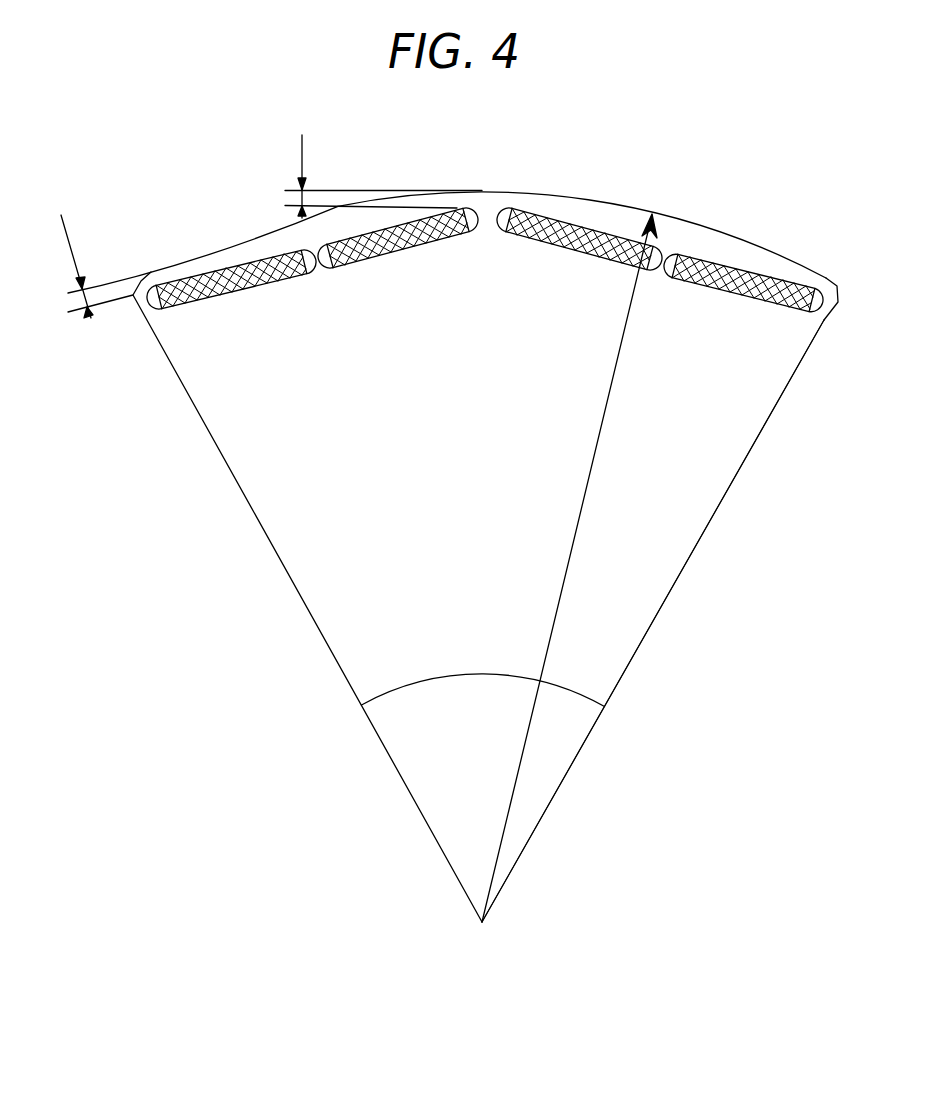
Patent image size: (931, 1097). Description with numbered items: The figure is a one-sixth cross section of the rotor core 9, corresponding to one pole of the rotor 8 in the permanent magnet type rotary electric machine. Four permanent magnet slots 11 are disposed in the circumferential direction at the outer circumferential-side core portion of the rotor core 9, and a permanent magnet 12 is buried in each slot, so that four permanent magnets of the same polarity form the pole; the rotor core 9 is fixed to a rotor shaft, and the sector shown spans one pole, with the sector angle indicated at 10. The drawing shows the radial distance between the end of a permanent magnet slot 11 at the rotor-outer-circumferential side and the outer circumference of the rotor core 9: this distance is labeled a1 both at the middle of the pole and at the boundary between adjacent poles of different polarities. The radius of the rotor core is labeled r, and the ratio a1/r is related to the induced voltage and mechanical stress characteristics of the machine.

The rotor 8 is at (614, 185).
The rotor core 9 is at (648, 571).
The angle of pole section 10 is at (538, 760).
The permanent magnet slot 11 is at (208, 306).
The permanent magnet 12 is at (216, 275).
The radius of the rotor core r is at (586, 512).
The distance between permanent magnet slot end and rotor core outer circumference a1 is at (174, 226).